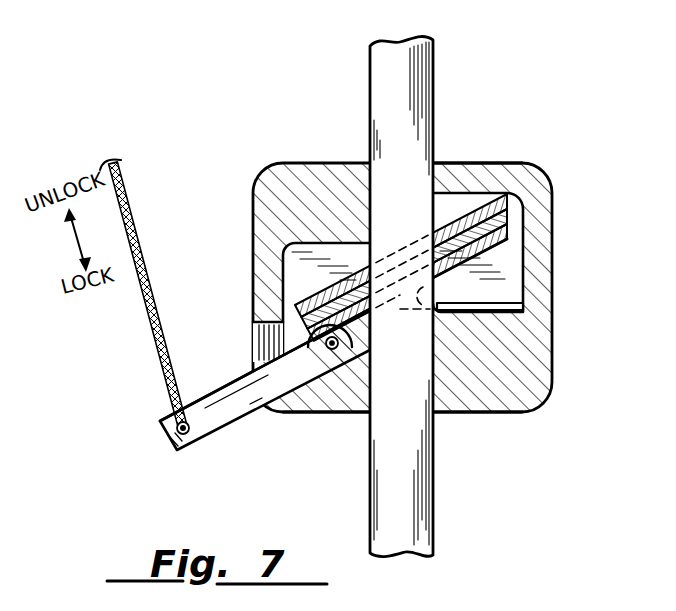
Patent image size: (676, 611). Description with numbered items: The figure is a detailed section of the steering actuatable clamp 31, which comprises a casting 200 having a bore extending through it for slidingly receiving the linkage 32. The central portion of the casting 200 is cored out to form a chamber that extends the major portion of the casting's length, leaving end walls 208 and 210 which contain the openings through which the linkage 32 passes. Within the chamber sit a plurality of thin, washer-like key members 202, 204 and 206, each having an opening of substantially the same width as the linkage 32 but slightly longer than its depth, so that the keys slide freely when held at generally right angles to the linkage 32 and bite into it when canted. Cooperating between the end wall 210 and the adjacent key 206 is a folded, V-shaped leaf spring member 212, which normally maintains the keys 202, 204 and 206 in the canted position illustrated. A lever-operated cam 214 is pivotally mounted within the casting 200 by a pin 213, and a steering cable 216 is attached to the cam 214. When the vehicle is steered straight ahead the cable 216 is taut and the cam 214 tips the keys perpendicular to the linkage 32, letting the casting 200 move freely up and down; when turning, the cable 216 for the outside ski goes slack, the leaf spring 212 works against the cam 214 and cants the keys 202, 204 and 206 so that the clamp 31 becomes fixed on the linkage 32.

The steering actuatable clamp 31 is at (342, 264).
The linkage 32 is at (413, 72).
The casting 200 is at (414, 281).
The key member 202 is at (512, 194).
The key member 204 is at (512, 210).
The key member 206 is at (510, 230).
The end wall 208 is at (447, 162).
The end wall 210 is at (492, 413).
The folded leaf spring member 212 is at (500, 300).
The pin 213 is at (253, 343).
The lever-operated cam 214 is at (335, 357).
The steering cable 216 is at (152, 333).